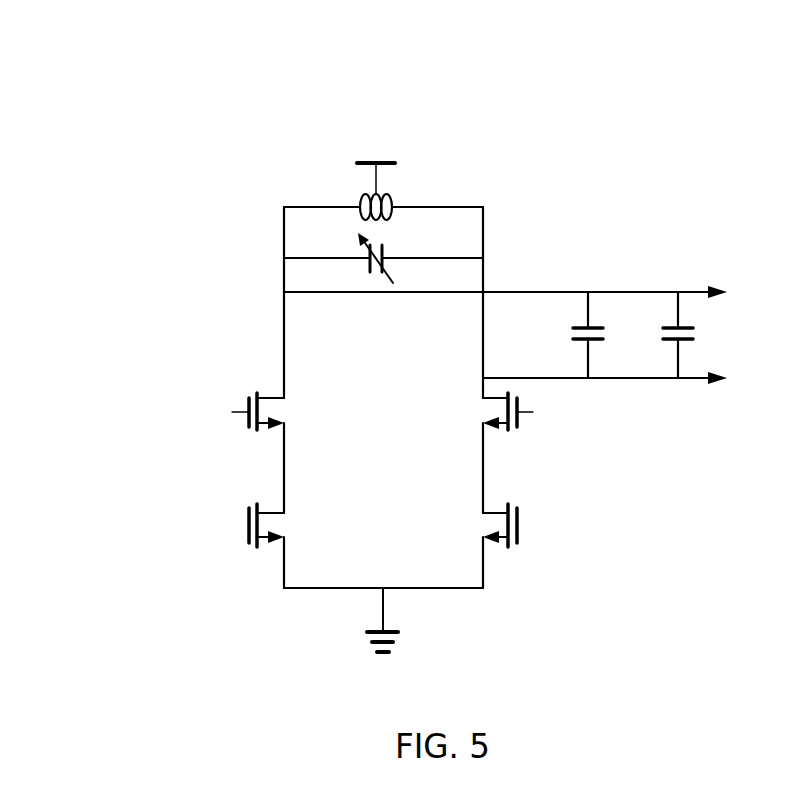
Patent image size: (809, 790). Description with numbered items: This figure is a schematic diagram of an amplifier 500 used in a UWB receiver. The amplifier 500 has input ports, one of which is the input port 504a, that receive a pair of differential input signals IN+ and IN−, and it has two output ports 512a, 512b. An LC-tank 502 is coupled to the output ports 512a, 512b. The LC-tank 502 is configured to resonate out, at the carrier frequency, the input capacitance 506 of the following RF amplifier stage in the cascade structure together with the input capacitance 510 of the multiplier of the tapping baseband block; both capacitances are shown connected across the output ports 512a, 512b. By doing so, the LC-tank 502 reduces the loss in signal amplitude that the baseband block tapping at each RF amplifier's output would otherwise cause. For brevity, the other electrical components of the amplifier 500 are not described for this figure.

The amplifier 500 is at (112, 82).
The LC-tank 502 is at (260, 293).
The input port 504a is at (236, 524).
The input capacitance 506 is at (583, 325).
The input capacitance 510 is at (672, 325).
The output port 512a is at (533, 288).
The output port 512b is at (633, 385).